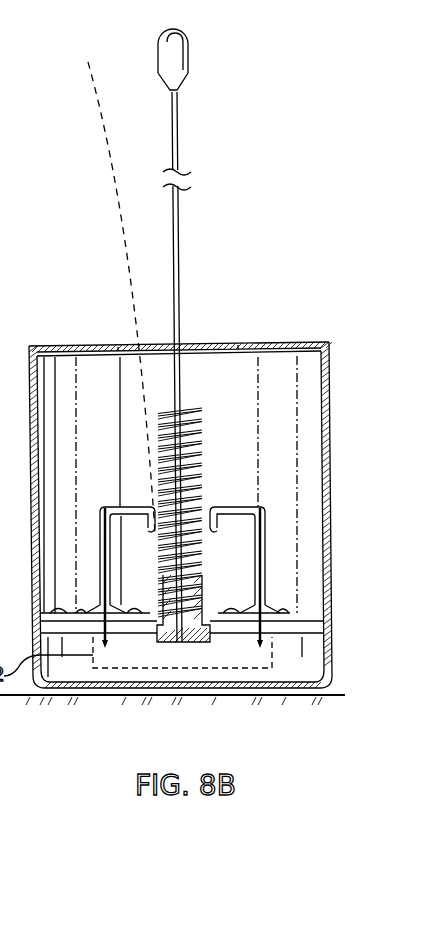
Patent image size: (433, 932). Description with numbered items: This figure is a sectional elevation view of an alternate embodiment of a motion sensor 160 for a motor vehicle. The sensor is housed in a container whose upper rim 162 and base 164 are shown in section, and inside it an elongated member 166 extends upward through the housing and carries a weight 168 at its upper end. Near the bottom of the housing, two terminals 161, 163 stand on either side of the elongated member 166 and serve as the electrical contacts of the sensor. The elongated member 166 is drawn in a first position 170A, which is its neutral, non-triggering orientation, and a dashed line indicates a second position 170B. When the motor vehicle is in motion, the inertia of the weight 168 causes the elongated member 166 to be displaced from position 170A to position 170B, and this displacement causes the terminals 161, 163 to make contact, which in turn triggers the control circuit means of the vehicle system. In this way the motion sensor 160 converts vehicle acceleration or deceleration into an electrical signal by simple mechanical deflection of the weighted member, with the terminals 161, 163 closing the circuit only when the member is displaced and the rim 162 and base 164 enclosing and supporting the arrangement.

The actuator assembly 160 is at (305, 165).
The terminal 161 is at (105, 650).
The housing rim 162 is at (265, 345).
The terminal 163 is at (222, 632).
The housing base 164 is at (337, 687).
The elongated member 166 is at (193, 231).
The weight 168 is at (177, 53).
The position 170A is at (74, 337).
The position 170B is at (41, 337).